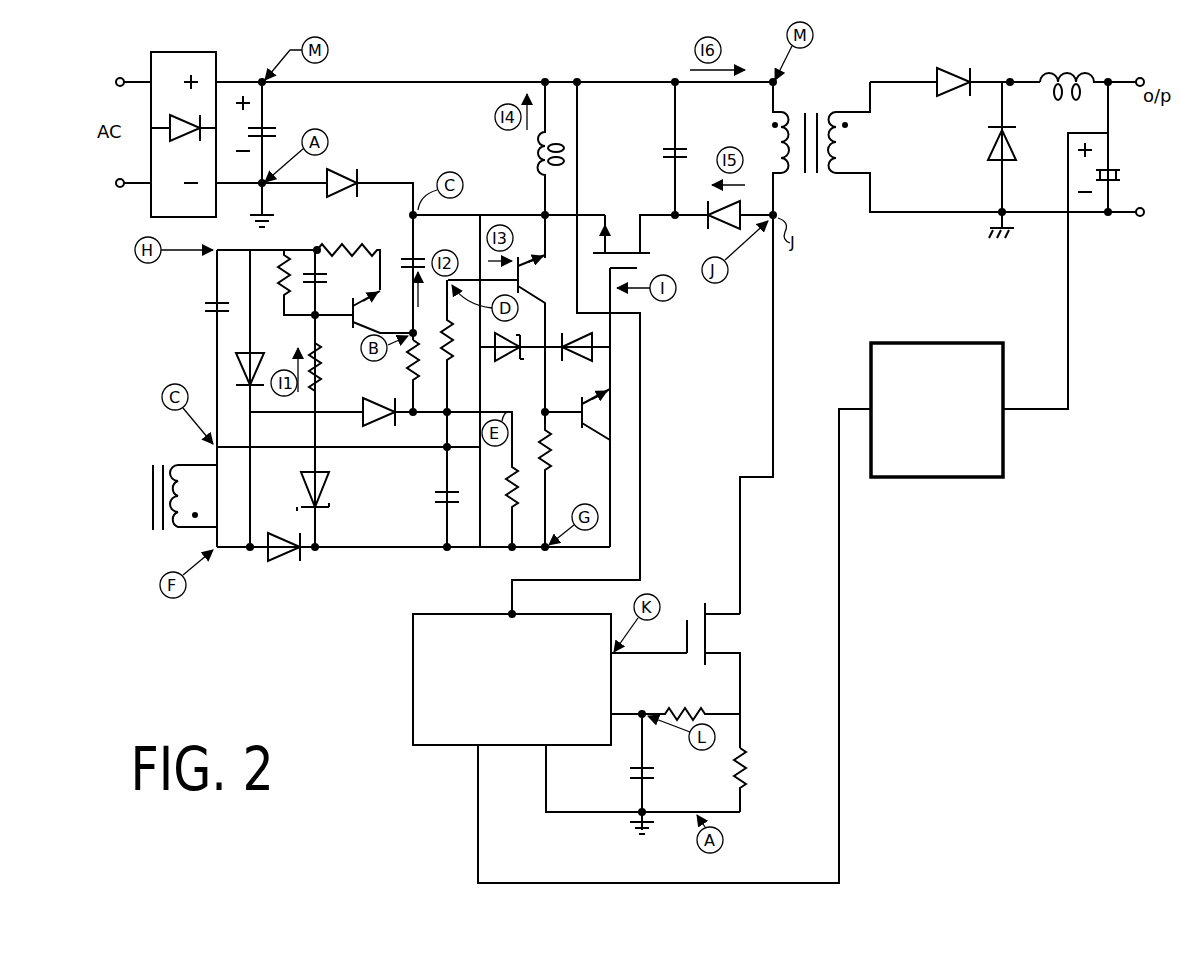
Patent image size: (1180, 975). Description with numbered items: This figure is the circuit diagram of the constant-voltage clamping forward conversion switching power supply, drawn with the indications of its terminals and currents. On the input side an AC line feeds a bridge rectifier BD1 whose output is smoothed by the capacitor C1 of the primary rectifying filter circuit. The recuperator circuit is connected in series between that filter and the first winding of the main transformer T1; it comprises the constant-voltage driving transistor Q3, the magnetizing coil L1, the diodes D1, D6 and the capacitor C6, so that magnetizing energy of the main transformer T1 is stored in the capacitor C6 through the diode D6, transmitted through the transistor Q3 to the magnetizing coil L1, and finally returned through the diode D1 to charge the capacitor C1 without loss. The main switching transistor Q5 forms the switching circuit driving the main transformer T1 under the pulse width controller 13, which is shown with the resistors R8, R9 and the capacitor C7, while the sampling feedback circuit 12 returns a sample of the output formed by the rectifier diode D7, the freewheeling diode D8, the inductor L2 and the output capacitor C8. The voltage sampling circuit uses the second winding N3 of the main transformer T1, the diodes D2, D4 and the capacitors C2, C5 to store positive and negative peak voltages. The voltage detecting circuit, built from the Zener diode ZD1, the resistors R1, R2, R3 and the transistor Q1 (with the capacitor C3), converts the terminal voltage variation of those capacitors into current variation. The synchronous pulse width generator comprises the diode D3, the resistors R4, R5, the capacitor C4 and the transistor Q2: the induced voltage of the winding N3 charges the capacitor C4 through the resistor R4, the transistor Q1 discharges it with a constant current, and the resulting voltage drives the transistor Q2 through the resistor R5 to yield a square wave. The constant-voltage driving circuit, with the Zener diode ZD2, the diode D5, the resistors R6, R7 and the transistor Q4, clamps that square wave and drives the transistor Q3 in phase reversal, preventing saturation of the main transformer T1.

The sampling feedback circuit 12 is at (905, 477).
The pulse width controller 13 is at (425, 745).
The bridge rectifier BD1 is at (183, 120).
The capacitor of the primary rectifying filter circuit C1 is at (265, 154).
The diode D1 is at (370, 182).
The magnetizing coil L1 is at (534, 148).
The capacitor C6 is at (684, 148).
The constant-voltage driving transistor Q3 is at (650, 368).
The diode D6 is at (739, 226).
The transistor Q2 is at (498, 313).
The Zener diode ZD2 is at (504, 362).
The diode D5 is at (573, 362).
The transistor Q4 is at (578, 468).
The resistor R7 is at (559, 479).
The resistor R6 is at (499, 479).
The capacitor C2 is at (201, 324).
The diode D2 is at (256, 398).
The resistor R1 is at (302, 282).
The capacitor C3 is at (305, 383).
The resistor R2 is at (349, 254).
The transistor Q1 is at (383, 312).
The resistor R3 is at (332, 367).
The capacitor C4 is at (421, 277).
The resistor R4 is at (409, 391).
The resistor R5 is at (444, 363).
The capacitor C5 is at (438, 497).
The diode D3 is at (365, 393).
The second winding N3 is at (182, 481).
The diode D4 is at (269, 557).
The Zener diode ZD1 is at (326, 508).
The main transformer T1 is at (938, 347).
The output rectifier diode D7 is at (955, 96).
The output inductor L2 is at (1088, 72).
The freewheel diode D8 is at (983, 160).
The output capacitor C8 is at (1111, 147).
The main switching transistor Q5 is at (689, 675).
The resistor R8 is at (675, 702).
The resistor R9 is at (722, 780).
The capacitor C7 is at (623, 774).